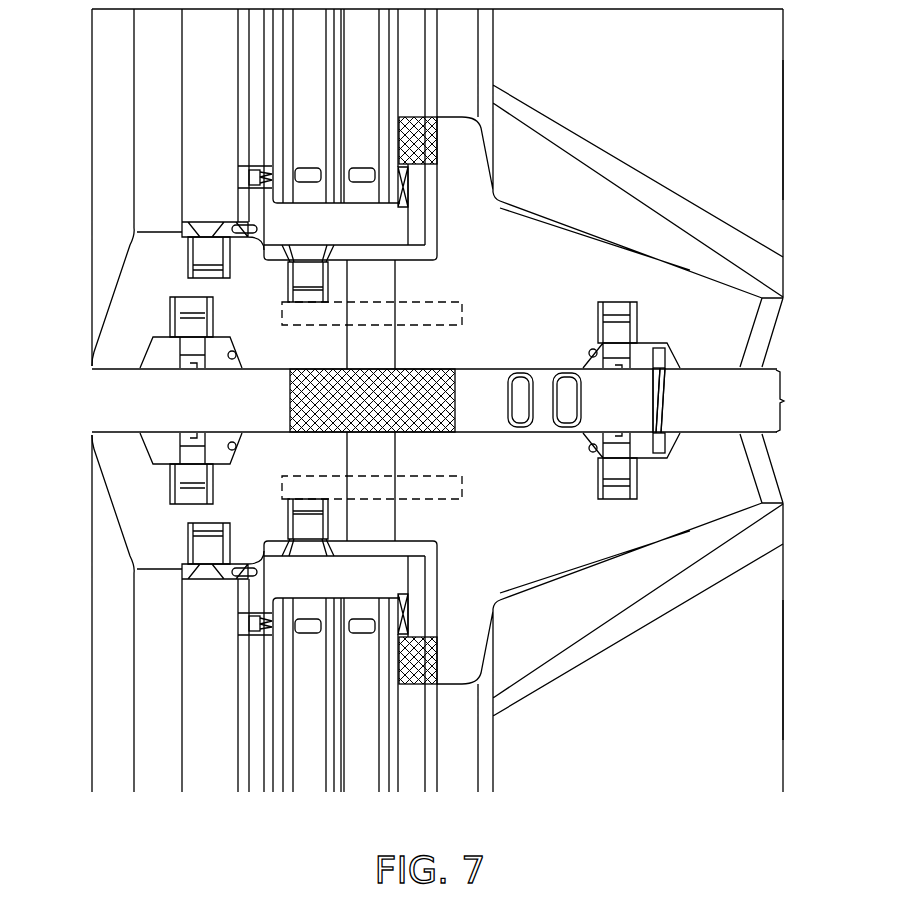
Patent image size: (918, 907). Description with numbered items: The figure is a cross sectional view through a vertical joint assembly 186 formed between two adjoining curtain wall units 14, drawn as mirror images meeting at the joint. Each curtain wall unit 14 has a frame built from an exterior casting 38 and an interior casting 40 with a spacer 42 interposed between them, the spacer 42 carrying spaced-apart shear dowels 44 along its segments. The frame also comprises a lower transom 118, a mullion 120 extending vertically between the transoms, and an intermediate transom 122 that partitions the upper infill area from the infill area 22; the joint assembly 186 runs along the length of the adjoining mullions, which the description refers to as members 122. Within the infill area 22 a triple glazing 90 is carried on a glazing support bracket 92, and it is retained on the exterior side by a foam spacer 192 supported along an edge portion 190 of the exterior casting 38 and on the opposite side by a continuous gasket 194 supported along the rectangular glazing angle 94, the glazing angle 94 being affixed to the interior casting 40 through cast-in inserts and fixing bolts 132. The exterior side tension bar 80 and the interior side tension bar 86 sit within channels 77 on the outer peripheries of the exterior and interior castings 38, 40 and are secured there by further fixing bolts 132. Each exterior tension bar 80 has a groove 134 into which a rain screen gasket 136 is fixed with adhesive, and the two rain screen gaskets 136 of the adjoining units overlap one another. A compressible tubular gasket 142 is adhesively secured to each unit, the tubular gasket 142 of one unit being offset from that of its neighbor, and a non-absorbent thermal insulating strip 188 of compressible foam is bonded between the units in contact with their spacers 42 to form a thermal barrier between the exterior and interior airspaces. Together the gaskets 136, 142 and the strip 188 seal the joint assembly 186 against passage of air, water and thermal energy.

The curtain wall unit 14 is at (745, 217).
The infill area 22 is at (198, 100).
The exterior casting 38 is at (775, 338).
The interior casting 40 is at (90, 348).
The spacer 42 is at (385, 288).
The shear dowels 44 is at (465, 300).
The channels 77 is at (236, 356).
The exterior side tension bar 80 is at (666, 425).
The interior side tension bar 86 is at (160, 360).
The triple glazing 90 is at (400, 83).
The glazing support bracket 92 is at (432, 192).
The glazing angle 94 is at (237, 192).
The lower transom 118 is at (775, 122).
The mullion 120 is at (558, 212).
The intermediate transom 122 is at (468, 372).
The cast-in insert and fixing bolt fasteners 132 is at (170, 313).
The groove 134 is at (660, 357).
The rain screen gasket 136 is at (663, 360).
The compressible tubular gasket 142 is at (503, 368).
The vertical joint assembly 186 is at (798, 401).
The thermal insulating strip 188 is at (437, 369).
The edge portion 190 is at (458, 117).
The foam spacer 192 is at (440, 143).
The continuous gasket 194 is at (257, 168).